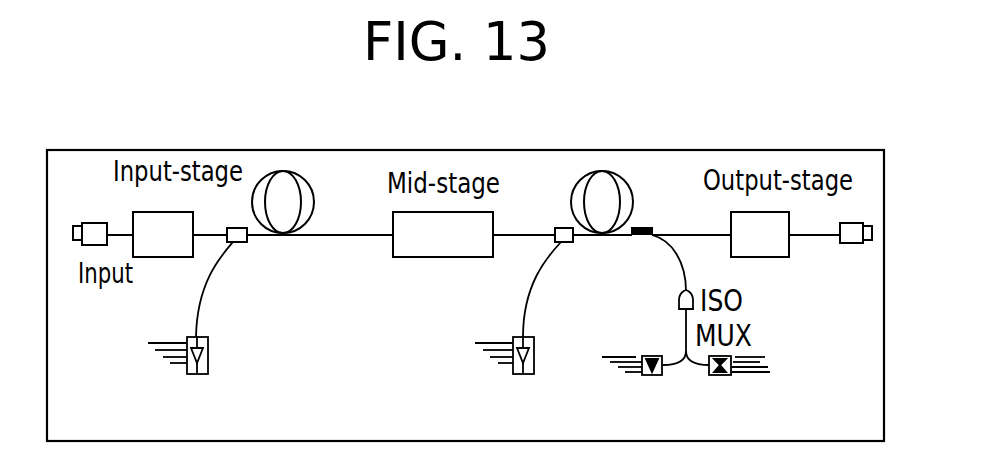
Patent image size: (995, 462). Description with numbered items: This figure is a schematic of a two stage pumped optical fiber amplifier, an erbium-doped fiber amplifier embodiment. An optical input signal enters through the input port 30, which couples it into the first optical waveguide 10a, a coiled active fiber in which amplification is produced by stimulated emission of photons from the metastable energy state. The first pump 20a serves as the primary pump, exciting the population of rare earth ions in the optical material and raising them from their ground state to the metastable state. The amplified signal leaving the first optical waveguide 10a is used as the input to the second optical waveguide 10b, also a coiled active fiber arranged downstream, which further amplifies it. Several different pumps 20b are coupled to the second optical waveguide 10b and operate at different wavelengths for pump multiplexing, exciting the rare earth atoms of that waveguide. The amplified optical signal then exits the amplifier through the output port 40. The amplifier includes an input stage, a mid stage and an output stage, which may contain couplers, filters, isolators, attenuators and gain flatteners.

The input port 30 is at (95, 223).
The output port 40 is at (852, 243).
The first optical waveguide 10a is at (319, 172).
The second optical waveguide 10b is at (612, 161).
The first pump 20a is at (221, 349).
The second pump 20b is at (644, 341).